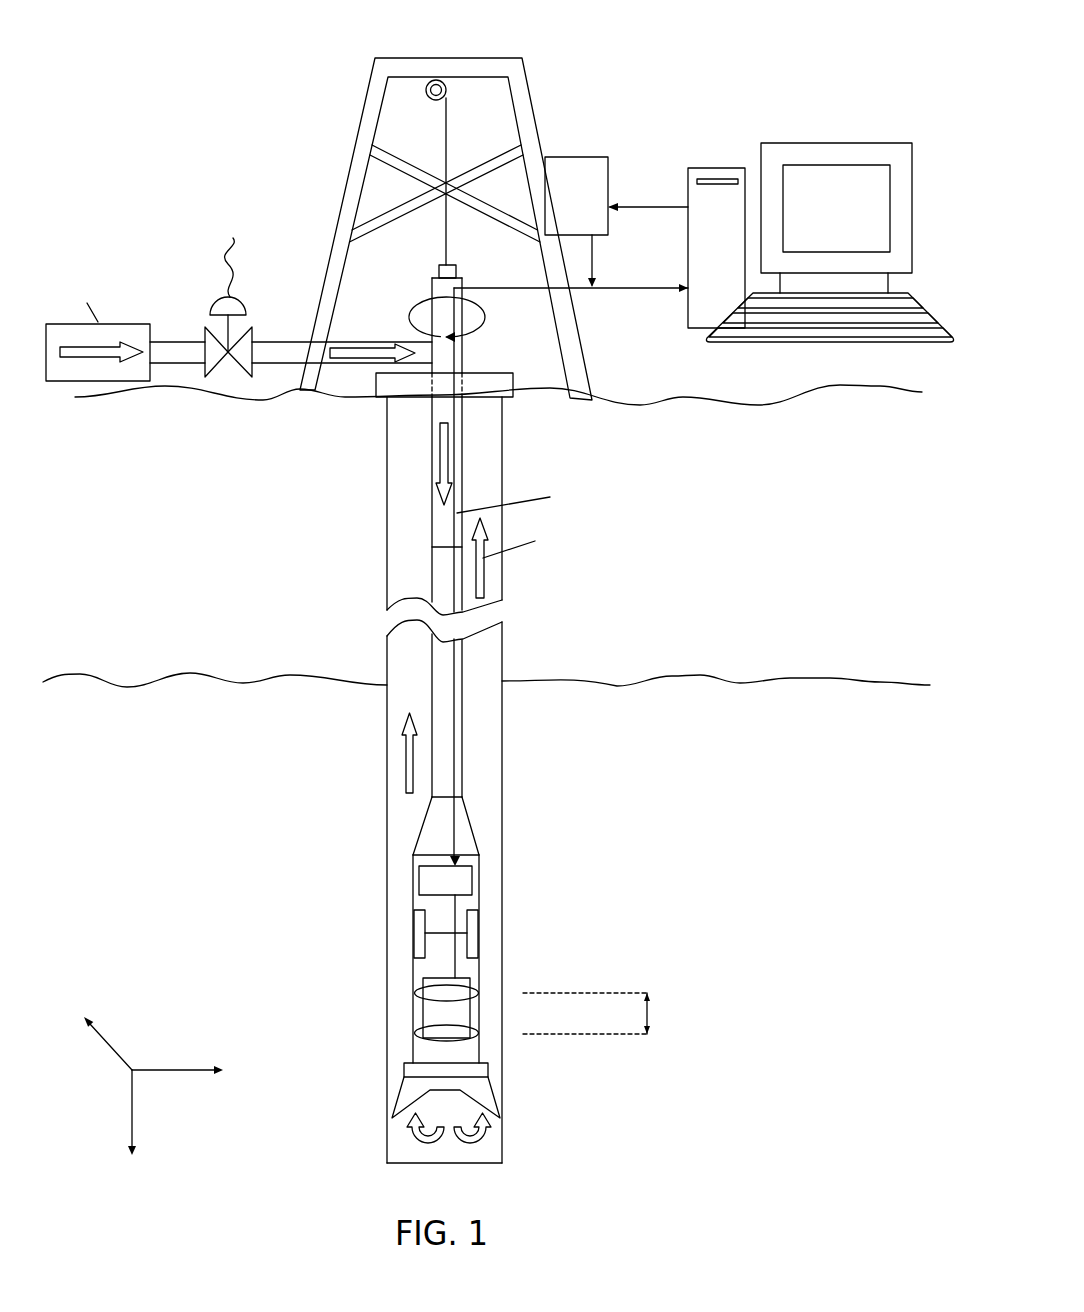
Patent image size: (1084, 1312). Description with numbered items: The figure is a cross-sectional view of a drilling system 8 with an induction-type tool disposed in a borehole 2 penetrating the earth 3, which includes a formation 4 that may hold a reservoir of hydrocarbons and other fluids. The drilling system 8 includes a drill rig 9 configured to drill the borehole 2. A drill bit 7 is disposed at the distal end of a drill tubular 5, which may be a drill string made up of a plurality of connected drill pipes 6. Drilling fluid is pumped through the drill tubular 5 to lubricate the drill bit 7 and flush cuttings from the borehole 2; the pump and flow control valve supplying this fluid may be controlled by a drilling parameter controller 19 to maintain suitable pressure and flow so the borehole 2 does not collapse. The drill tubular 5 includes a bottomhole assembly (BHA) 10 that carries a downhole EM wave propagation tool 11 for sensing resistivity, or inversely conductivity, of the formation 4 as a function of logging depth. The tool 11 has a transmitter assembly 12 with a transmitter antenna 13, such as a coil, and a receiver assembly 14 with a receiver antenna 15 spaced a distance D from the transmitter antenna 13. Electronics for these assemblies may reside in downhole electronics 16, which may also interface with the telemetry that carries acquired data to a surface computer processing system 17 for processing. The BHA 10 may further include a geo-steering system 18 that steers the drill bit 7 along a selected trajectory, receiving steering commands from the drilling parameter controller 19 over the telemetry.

The borehole 2 is at (400, 564).
The earth 3 is at (813, 448).
The formation 4 is at (848, 740).
The drill tubular 5 is at (430, 662).
The drill pipes 6 is at (431, 518).
The drill bit 7 is at (407, 1090).
The drilling system 8 is at (779, 95).
The drill rig 9 is at (377, 63).
The bottomhole assembly (BHA) 10 is at (418, 832).
The downhole EM wave propagation tool 11 is at (385, 1017).
The transmitter assembly 12 is at (500, 978).
The transmitter antenna 13 is at (475, 987).
The receiver assembly 14 is at (495, 1052).
The receiver antenna 15 is at (495, 1052).
The downhole electronics 16 is at (457, 880).
The computer processing system 17 is at (713, 172).
The geo-steering system 18 is at (418, 935).
The drilling parameter controller 19 is at (585, 167).